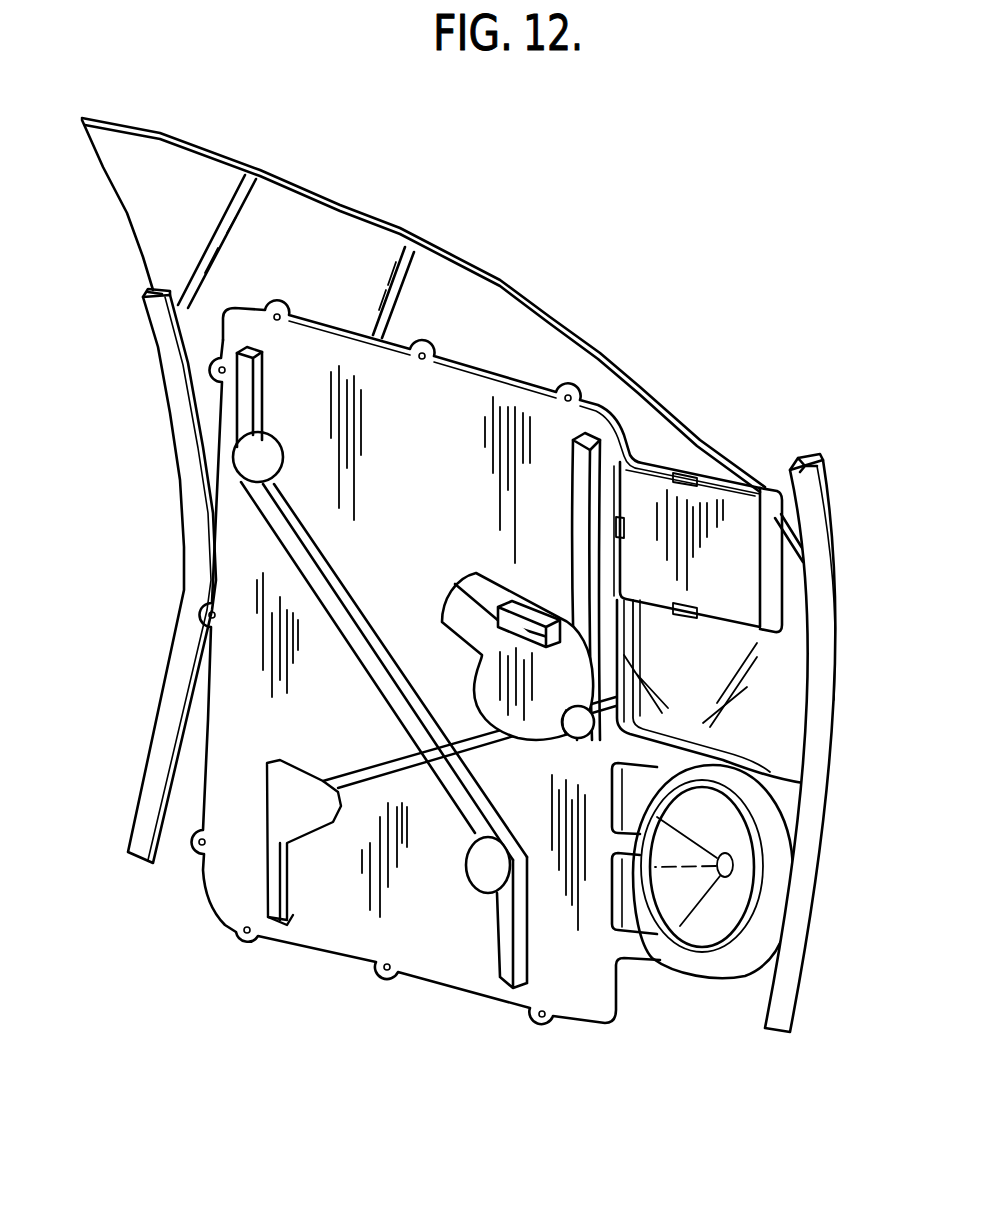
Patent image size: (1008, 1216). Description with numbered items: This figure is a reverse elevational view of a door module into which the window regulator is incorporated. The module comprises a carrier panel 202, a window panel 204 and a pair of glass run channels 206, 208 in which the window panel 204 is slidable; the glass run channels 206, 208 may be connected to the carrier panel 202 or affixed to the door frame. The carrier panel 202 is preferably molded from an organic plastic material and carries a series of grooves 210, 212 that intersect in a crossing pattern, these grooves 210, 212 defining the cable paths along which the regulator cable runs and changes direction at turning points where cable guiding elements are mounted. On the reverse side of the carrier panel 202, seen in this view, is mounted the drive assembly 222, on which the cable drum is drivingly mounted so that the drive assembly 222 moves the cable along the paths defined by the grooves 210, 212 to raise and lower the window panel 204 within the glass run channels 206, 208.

The carrier panel 202 is at (438, 972).
The window panel 204 is at (552, 318).
The glass run channel 206 is at (826, 580).
The glass run channel 208 is at (186, 551).
The groove 210 is at (357, 770).
The groove 212 is at (383, 653).
The drive assembly 222 is at (452, 600).